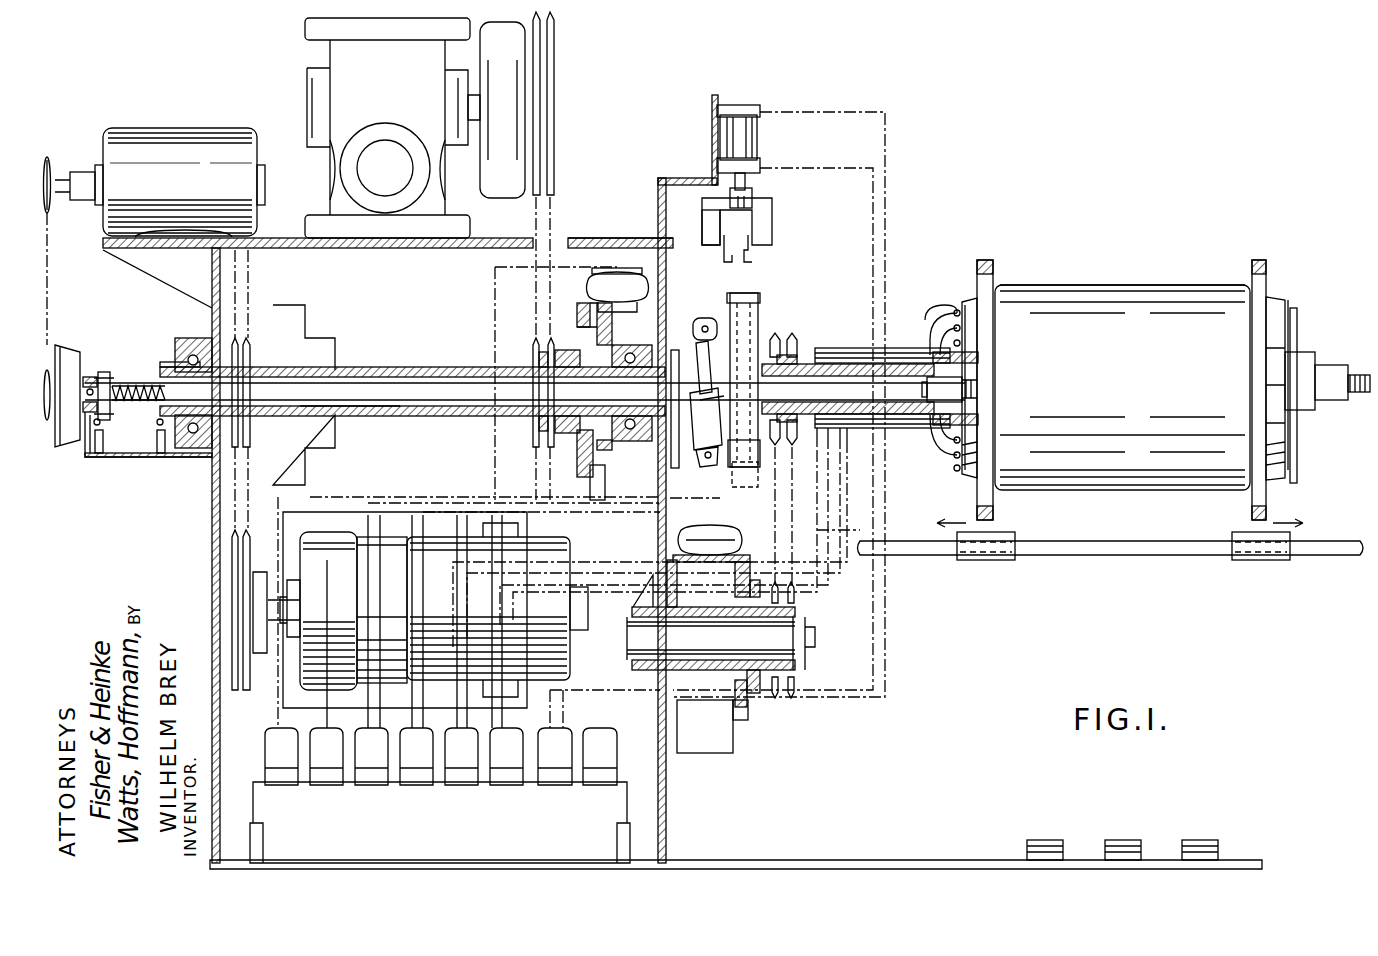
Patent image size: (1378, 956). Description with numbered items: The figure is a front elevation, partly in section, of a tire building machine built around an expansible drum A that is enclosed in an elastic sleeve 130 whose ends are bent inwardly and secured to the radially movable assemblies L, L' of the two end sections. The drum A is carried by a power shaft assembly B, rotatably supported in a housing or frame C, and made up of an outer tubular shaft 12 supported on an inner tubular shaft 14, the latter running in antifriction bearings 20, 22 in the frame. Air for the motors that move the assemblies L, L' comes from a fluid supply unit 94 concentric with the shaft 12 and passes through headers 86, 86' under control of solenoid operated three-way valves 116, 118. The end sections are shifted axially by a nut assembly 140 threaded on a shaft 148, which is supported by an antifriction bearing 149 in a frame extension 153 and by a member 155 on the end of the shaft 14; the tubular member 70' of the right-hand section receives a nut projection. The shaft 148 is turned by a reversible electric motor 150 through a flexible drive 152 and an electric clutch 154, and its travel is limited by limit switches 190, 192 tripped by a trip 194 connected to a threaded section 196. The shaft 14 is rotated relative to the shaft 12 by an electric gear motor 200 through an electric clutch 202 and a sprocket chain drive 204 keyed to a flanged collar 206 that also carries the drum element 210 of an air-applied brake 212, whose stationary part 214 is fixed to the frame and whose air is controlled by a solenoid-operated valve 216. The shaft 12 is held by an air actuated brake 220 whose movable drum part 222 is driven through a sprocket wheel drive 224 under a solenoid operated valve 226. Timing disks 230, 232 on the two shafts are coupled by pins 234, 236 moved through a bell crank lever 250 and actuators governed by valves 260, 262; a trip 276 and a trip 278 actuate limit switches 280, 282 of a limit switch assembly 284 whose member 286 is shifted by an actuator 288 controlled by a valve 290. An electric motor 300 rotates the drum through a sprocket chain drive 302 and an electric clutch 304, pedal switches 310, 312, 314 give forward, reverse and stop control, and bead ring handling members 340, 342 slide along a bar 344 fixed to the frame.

The tubular shaft 12 is at (805, 360).
The tubular shaft 14 is at (426, 367).
The antifriction bearing 20 is at (196, 340).
The antifriction bearing 22 is at (640, 345).
The tubular member 70' is at (1318, 395).
The header 86 is at (937, 398).
The header 86' is at (1310, 396).
The fluid supply unit 94 is at (920, 348).
The solenoid operated three-way valve 116 is at (458, 778).
The solenoid operated three-way valve 118 is at (500, 778).
The elastic sleeve 130 is at (1095, 290).
The nut assembly 140 is at (940, 400).
The shaft 148 is at (432, 413).
The antifriction bearing 149 is at (88, 377).
The reversible electric motor 150 is at (186, 133).
The flexible drive 152 is at (48, 160).
The frame extension 153 is at (135, 458).
The electric clutch 154 is at (70, 348).
The member 155 is at (1320, 372).
The limit switch 190 is at (100, 454).
The limit switch 192 is at (160, 454).
The trip 194 is at (110, 380).
The threaded section 196 is at (150, 402).
The electric gear motor 200 is at (330, 52).
The electric clutch 202 is at (507, 185).
The sprocket chain drive 204 is at (554, 98).
The flanged collar 206 is at (535, 351).
The drum element 210 is at (580, 468).
The air-applied brake 212 is at (603, 486).
The stationary brake part 214 is at (621, 277).
The solenoid-operated valve 216 is at (280, 785).
The air actuated brake 220 is at (712, 755).
The movable drum part 222 is at (748, 712).
The sprocket wheel drive 224 is at (797, 675).
The solenoid operated valve 226 is at (318, 778).
The timing disk 230 is at (739, 293).
The timing disk 232 is at (760, 335).
The pin 234 is at (702, 340).
The pin 236 is at (733, 491).
The bell crank lever 250 is at (689, 396).
The solenoid operated three-way valve 260 is at (368, 778).
The solenoid operated three-way valve 262 is at (410, 778).
The trip 276 is at (708, 318).
The trip 278 is at (760, 306).
The limit switch 280 is at (705, 228).
The limit switch 282 is at (775, 220).
The limit switch assembly 284 is at (782, 244).
The slidable member 286 is at (760, 195).
The fluid pressure operated actuator 288 is at (758, 140).
The solenoid-operated three-way air valve 290 is at (553, 778).
The electric motor 300 is at (570, 540).
The sprocket chain drive 302 is at (240, 690).
The electric clutch 304 is at (305, 318).
The forward pedal switch 310 is at (1045, 840).
The reverse pedal switch 312 is at (1127, 840).
The stop pedal switch 314 is at (1212, 840).
The bead ring handling member 340 is at (997, 533).
The bead ring handling member 342 is at (1240, 532).
The bar 344 is at (1130, 519).
The tire building drum assembly A is at (1181, 280).
The power shaft assembly B is at (391, 420).
The housing or frame C is at (609, 233).
The radially movable assembly L is at (966, 390).
The radially movable assembly L' is at (1277, 390).